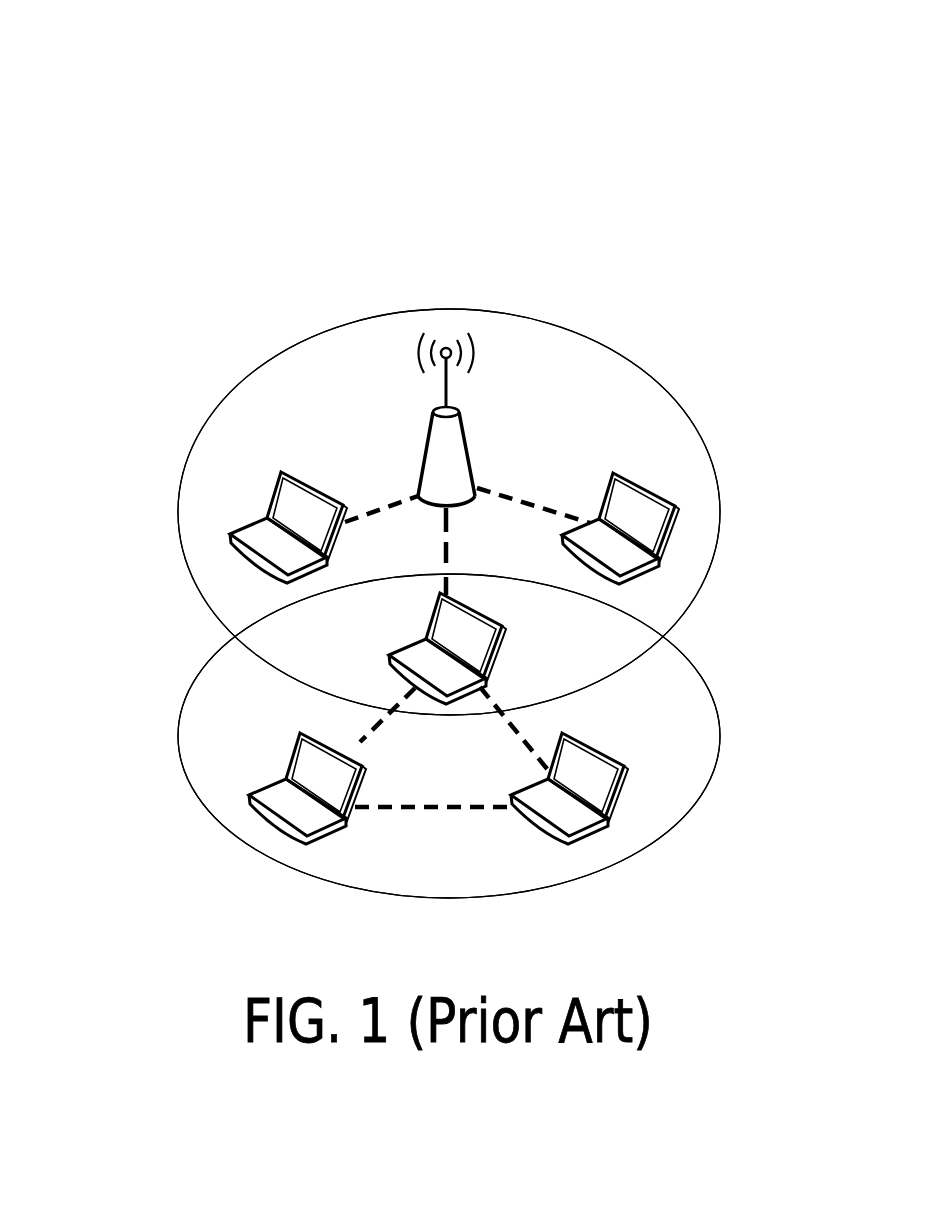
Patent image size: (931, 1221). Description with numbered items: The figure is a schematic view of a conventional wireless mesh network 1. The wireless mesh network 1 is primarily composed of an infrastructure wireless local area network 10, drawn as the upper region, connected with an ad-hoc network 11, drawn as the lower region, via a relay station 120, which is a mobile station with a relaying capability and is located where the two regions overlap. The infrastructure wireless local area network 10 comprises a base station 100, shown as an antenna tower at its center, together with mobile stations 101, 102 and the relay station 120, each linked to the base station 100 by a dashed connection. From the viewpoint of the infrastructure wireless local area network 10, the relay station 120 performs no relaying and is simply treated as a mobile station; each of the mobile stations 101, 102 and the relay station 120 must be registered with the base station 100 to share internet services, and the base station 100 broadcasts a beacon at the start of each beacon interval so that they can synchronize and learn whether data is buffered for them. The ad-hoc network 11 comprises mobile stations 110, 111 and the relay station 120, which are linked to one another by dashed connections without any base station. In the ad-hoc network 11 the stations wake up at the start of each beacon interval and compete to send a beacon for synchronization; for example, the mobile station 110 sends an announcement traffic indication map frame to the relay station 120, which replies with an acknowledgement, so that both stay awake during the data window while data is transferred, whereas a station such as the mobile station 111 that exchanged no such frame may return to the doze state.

The wireless mesh network 1 is at (432, 50).
The infrastructure wireless local area network 10 is at (259, 362).
The base station 100 is at (460, 415).
The mobile station 101 is at (298, 477).
The mobile station 102 is at (653, 488).
The ad-hoc network 11 is at (193, 680).
The mobile station 110 is at (312, 738).
The mobile station 111 is at (613, 750).
The relay station 120 is at (487, 613).